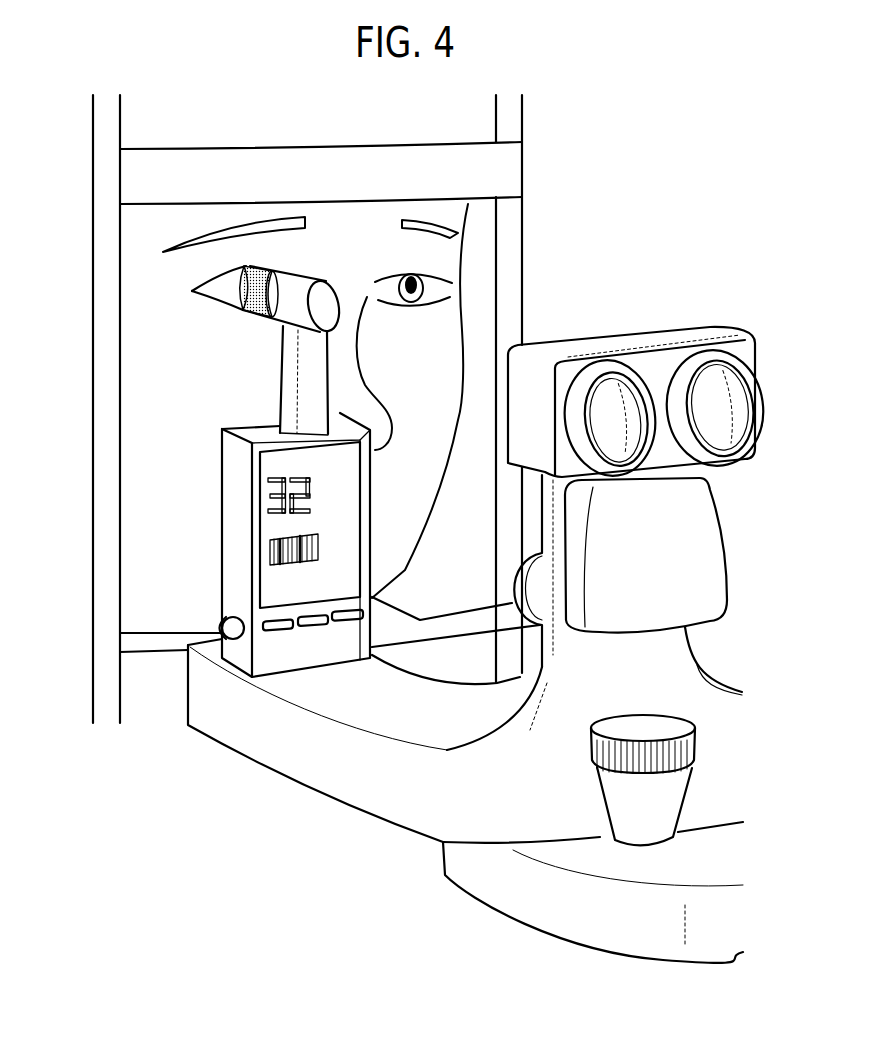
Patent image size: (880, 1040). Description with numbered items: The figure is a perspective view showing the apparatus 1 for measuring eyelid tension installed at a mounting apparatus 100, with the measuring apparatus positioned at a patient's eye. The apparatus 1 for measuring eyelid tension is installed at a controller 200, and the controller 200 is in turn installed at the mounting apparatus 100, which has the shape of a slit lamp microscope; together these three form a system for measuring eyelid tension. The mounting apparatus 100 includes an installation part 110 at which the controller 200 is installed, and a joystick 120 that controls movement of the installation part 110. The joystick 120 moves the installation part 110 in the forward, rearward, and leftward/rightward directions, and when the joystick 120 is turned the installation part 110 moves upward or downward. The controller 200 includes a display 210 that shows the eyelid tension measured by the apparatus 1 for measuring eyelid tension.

The apparatus for measuring eyelid tension 1 is at (266, 324).
The mounting apparatus 100 is at (479, 666).
The installation part 110 is at (360, 783).
The joystick 120 is at (628, 800).
The controller 200 is at (202, 545).
The display 210 is at (282, 582).